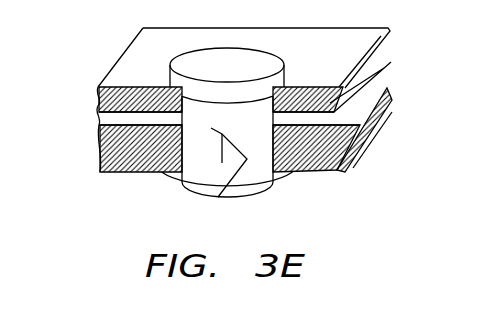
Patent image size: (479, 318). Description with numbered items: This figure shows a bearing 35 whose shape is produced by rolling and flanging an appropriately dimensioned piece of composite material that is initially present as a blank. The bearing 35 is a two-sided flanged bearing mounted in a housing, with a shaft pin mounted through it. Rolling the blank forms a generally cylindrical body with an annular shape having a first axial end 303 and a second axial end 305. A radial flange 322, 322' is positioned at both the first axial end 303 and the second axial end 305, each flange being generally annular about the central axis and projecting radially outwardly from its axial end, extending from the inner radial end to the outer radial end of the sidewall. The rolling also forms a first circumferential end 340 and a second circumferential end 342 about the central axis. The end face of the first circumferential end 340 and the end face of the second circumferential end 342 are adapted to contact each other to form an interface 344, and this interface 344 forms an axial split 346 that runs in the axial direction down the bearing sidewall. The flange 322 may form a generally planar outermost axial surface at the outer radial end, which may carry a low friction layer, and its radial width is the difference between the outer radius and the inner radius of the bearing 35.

The bearing 35 is at (295, 87).
The second axial end 305 is at (102, 122).
The flange 322 is at (275, 143).
The second circumferential end 342 is at (345, 163).
The first axial end 303 is at (183, 186).
The interface 344 is at (240, 192).
The radial flange 322' is at (277, 194).
The first circumferential end 340 is at (240, 169).
The axial split 346 is at (240, 164).